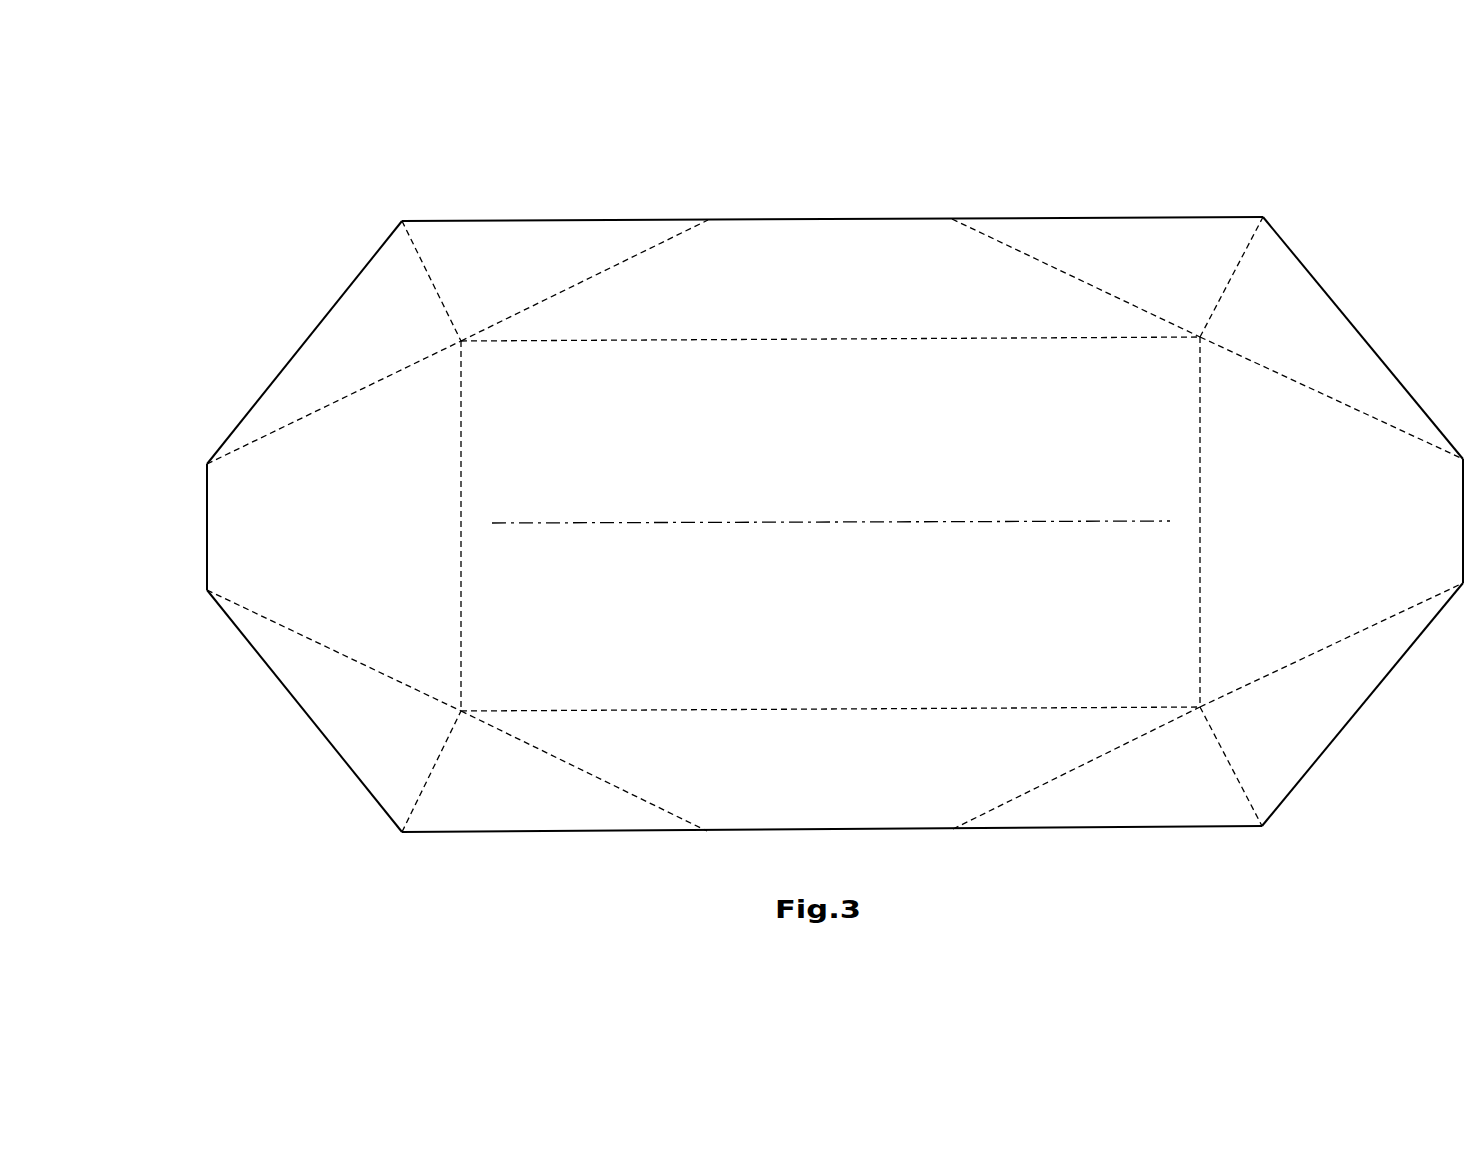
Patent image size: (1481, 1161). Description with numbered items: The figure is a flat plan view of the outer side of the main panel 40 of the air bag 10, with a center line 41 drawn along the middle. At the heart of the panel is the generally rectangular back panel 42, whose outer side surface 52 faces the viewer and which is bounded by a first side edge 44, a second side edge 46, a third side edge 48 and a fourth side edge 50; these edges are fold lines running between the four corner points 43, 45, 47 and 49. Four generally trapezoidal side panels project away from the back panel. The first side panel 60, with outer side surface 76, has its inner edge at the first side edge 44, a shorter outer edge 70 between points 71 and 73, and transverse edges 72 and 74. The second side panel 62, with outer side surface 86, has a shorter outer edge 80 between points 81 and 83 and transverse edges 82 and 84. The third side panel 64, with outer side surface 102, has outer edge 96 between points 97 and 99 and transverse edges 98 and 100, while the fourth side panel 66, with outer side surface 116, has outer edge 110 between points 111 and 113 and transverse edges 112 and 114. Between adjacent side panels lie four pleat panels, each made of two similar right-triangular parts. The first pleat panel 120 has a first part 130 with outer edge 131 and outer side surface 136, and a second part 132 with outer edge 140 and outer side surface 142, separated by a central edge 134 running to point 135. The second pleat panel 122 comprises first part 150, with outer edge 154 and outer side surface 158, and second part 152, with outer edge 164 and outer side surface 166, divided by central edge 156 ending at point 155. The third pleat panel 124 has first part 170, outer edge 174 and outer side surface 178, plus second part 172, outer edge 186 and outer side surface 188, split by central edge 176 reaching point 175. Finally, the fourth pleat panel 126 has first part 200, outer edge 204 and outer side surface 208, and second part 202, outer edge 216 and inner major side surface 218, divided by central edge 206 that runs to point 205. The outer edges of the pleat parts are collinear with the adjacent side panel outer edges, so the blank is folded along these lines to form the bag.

The air bag 10 is at (920, 178).
The main panel 40 is at (838, 217).
The center line 41 is at (887, 525).
The back panel 42 is at (978, 340).
The point 43 is at (462, 342).
The first side edge 44 is at (752, 340).
The point 45 is at (1199, 338).
The second side edge 46 is at (1200, 435).
The point 47 is at (1199, 707).
The third side edge 48 is at (972, 710).
The point 49 is at (462, 710).
The fourth side edge 50 is at (461, 580).
The outer side surface 52 is at (830, 524).
The first side panel 60 is at (868, 341).
The second side panel 62 is at (1199, 585).
The third side panel 64 is at (778, 730).
The fourth side panel 66 is at (463, 450).
The outer edge 70 is at (765, 220).
The point 71 is at (708, 220).
The transverse edge 72 is at (530, 305).
The point 73 is at (952, 219).
The transverse edge 74 is at (1110, 280).
The outer side surface 76 is at (830, 280).
The outer edge 80 is at (1464, 530).
The point 81 is at (1463, 459).
The transverse edge 82 is at (1305, 385).
The point 83 is at (1463, 583).
The transverse edge 84 is at (1305, 650).
The outer side surface 86 is at (1331, 522).
The outer edge 96 is at (830, 830).
The point 97 is at (953, 829).
The transverse edge 98 is at (1045, 787).
The point 99 is at (707, 831).
The transverse edge 100 is at (610, 778).
The outer side surface 102 is at (830, 769).
The outer edge 110 is at (207, 535).
The point 111 is at (207, 590).
The transverse edge 112 is at (283, 430).
The point 113 is at (207, 464).
The transverse edge 114 is at (300, 640).
The outer side surface 116 is at (334, 526).
The first pleat panel 120 is at (1312, 237).
The second pleat panel 122 is at (1295, 840).
The third pleat panel 124 is at (358, 800).
The fourth pleat panel 126 is at (310, 300).
The first part 130 is at (1192, 217).
The outer edge 131 is at (1082, 218).
The second part 132 is at (1314, 280).
The central edge 134 is at (1230, 275).
The point 135 is at (1263, 217).
The outer side surface 136 is at (1107, 277).
The outer edge 140 is at (1393, 377).
The outer side surface 142 is at (1331, 338).
The first part 150 is at (1368, 690).
The second part 152 is at (1108, 829).
The outer edge 154 is at (1340, 743).
The point 155 is at (1262, 826).
The central edge 156 is at (1238, 767).
The outer side surface 158 is at (1331, 704).
The outer edge 164 is at (1178, 830).
The outer side surface 166 is at (1107, 768).
The first part 170 is at (528, 834).
The second part 172 is at (305, 710).
The outer edge 174 is at (545, 832).
The point 175 is at (402, 832).
The central edge 176 is at (423, 790).
The outer side surface 178 is at (554, 771).
The outer edge 186 is at (255, 650).
The outer side surface 188 is at (334, 711).
The first part 200 is at (282, 370).
The second part 202 is at (462, 220).
The outer edge 204 is at (385, 245).
The point 205 is at (402, 221).
The central edge 206 is at (435, 310).
The outer side surface 208 is at (334, 342).
The outer edge 216 is at (540, 220).
The inner major side surface 218 is at (555, 280).